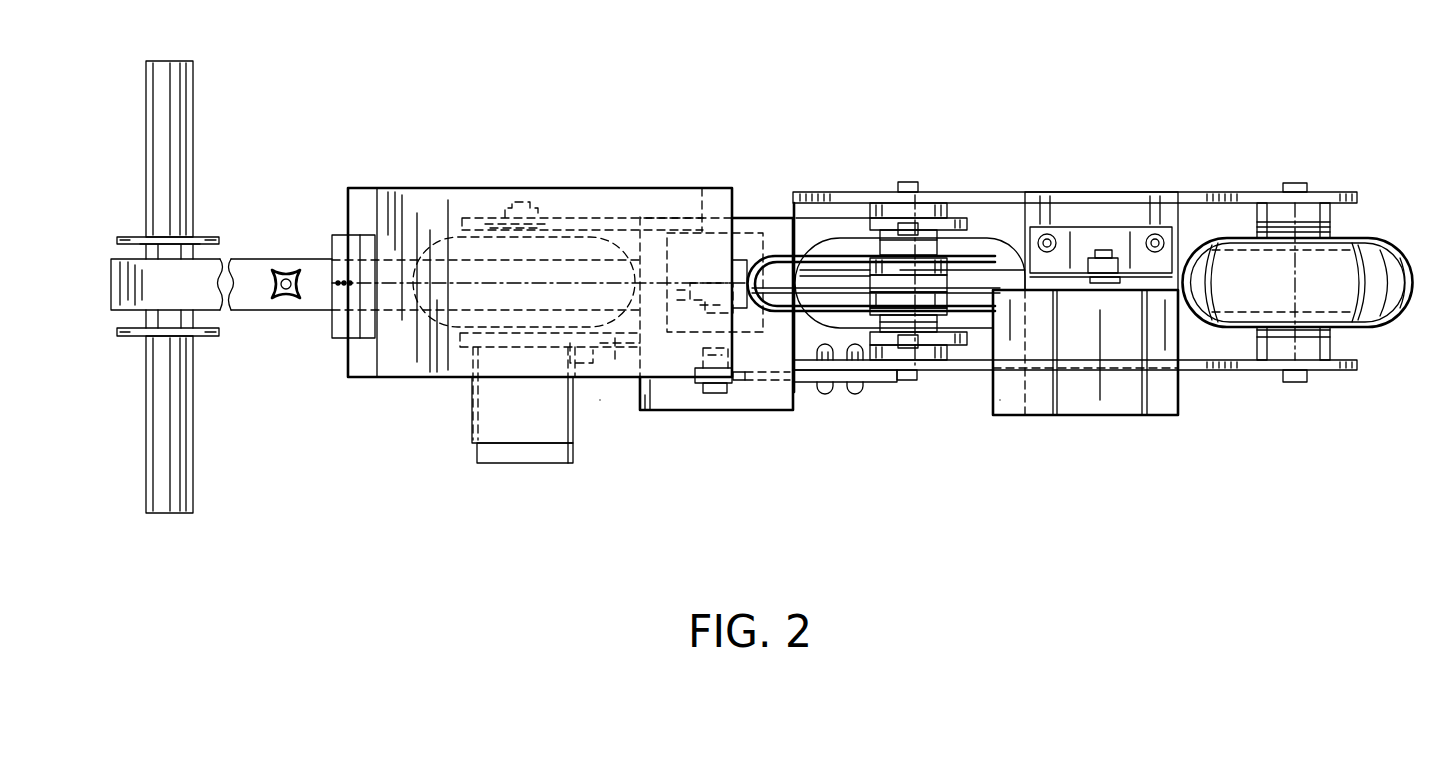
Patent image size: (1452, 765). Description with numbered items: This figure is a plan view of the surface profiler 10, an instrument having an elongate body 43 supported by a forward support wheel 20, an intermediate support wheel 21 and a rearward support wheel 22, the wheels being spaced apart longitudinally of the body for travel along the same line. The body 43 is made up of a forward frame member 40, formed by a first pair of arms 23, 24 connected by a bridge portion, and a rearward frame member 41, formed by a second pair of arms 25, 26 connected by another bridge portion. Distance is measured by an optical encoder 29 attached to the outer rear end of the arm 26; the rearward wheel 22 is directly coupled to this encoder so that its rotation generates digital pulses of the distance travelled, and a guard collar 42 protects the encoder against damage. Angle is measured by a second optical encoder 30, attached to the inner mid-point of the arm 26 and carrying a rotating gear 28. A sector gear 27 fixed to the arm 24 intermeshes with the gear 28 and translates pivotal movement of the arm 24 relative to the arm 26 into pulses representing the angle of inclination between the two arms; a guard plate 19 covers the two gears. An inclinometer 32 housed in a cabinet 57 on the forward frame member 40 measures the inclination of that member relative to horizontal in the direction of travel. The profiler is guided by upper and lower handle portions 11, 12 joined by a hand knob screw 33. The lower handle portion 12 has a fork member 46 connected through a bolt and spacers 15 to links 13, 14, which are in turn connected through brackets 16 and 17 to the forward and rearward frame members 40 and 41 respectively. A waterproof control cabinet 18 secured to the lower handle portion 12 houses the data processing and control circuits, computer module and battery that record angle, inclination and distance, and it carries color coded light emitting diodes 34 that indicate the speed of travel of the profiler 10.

The surface profiler 10 is at (1249, 111).
The upper handle portion 11 is at (221, 258).
The lower handle portion 12 is at (258, 258).
The link 13 is at (1003, 265).
The link 14 is at (833, 283).
The bolt and spacers 15 is at (922, 205).
The bracket 16 is at (1097, 228).
The bracket 17 is at (645, 410).
The control cabinet 18 is at (503, 188).
The guard plate 19 is at (770, 410).
The forward support wheel 20 is at (1392, 245).
The intermediate support wheel 21 is at (990, 237).
The rearward support wheel 22 is at (441, 232).
The arm 23 is at (1250, 192).
The arm 24 is at (1197, 372).
The arm 25 is at (558, 218).
The arm 26 is at (615, 338).
The sector gear 27 is at (805, 385).
The rotating gear 28 is at (715, 393).
The optical encoder 29 is at (477, 452).
The optical encoder 30 is at (703, 188).
The inclinometer 32 is at (1115, 415).
The hand knob screw 33 is at (283, 301).
The light emitting diodes 34 is at (340, 288).
The forward frame member 40 is at (1088, 116).
The rearward frame member 41 is at (642, 118).
The guard collar 42 is at (505, 463).
The elongate body 43 is at (912, 392).
The fork member 46 is at (851, 255).
The cabinet 57 is at (1025, 387).